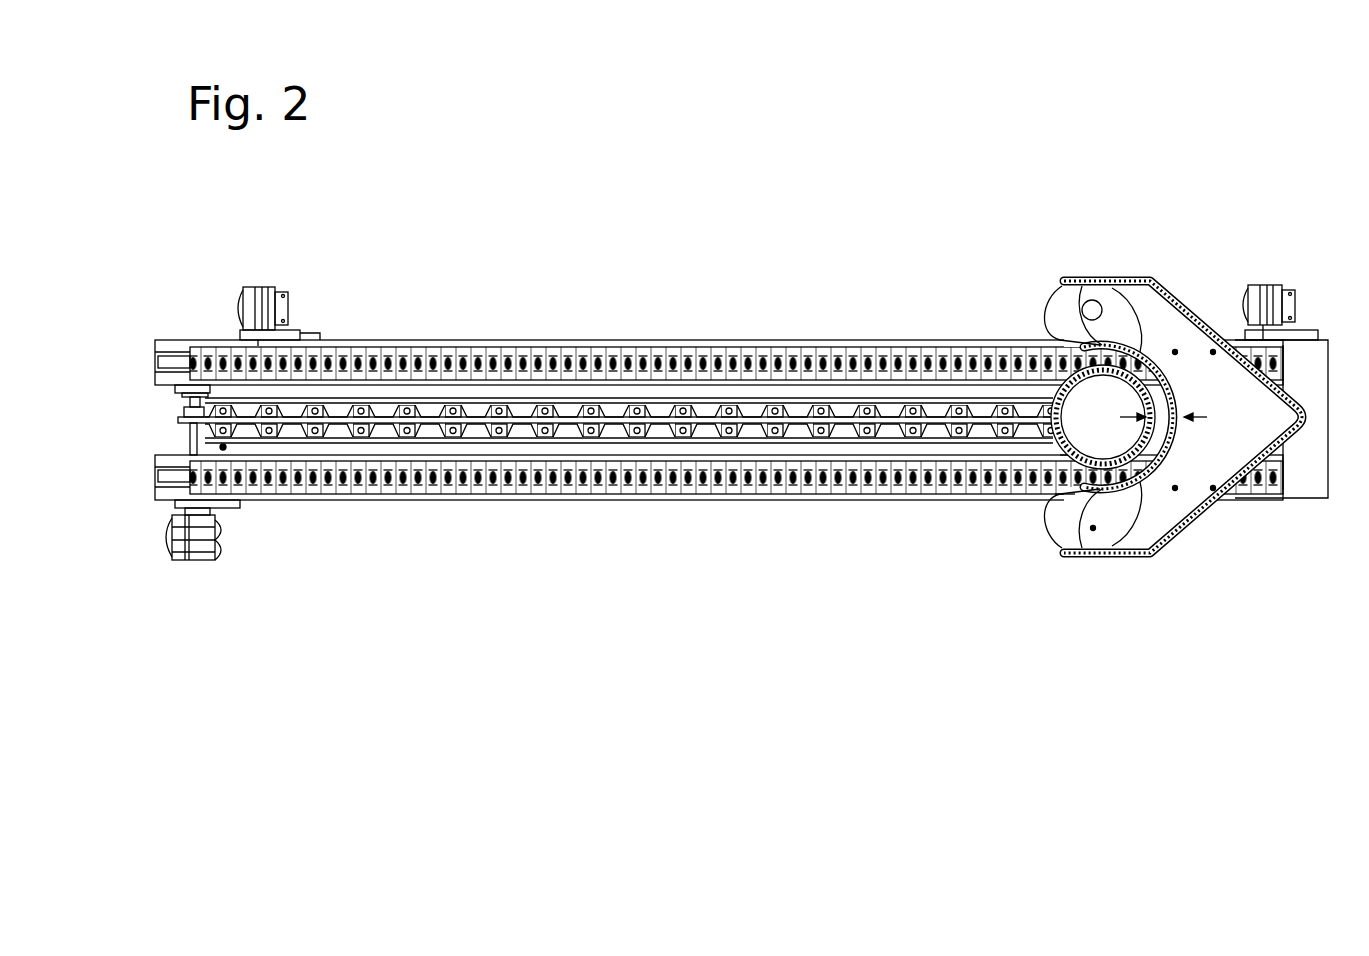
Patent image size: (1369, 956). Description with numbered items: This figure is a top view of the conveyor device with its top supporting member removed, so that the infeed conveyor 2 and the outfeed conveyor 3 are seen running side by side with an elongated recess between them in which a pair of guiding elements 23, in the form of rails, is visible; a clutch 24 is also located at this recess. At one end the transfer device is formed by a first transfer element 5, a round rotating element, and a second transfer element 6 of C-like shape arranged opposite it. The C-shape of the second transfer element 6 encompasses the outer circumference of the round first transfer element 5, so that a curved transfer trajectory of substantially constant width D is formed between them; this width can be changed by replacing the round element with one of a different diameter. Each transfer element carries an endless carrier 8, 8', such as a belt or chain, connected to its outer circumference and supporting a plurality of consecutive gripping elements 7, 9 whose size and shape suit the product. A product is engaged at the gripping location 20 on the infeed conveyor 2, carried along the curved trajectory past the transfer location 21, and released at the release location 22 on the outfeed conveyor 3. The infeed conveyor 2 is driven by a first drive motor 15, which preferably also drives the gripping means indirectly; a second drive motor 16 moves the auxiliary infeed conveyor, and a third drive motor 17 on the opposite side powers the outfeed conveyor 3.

The infeed conveyor 2 is at (455, 345).
The outfeed conveyor 3 is at (486, 497).
The first transfer element 5 is at (1105, 395).
The second transfer element 6 is at (1192, 546).
The gripping element of the first transfer element 7 is at (1150, 560).
The endless carrier of the second transfer element 8 is at (1092, 546).
The endless carrier of the first transfer element 8' is at (1021, 509).
The gripping element of the second transfer element 9 is at (1062, 443).
The first drive motor 15 is at (1263, 291).
The second drive motor 16 is at (264, 291).
The third drive motor 17 is at (210, 541).
The gripping location 20 is at (1106, 392).
The transfer location 21 is at (1182, 457).
The release location 22 is at (1063, 489).
The guiding elements 23 is at (192, 402).
The clutch 24 is at (168, 420).
The width of the transfer trajectory D is at (1163, 417).